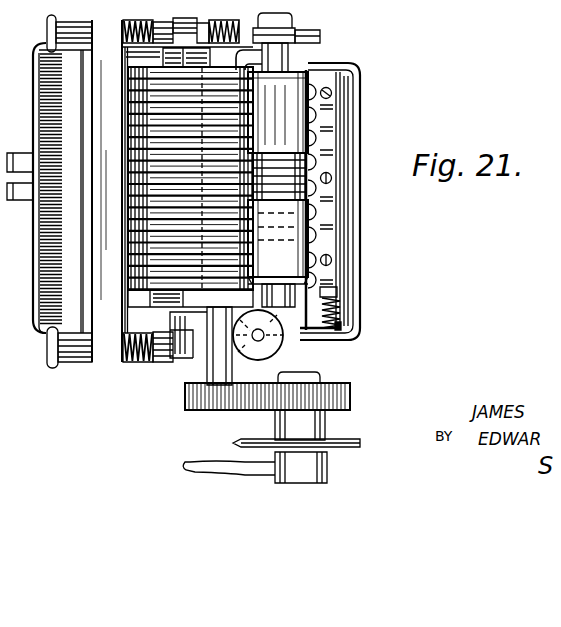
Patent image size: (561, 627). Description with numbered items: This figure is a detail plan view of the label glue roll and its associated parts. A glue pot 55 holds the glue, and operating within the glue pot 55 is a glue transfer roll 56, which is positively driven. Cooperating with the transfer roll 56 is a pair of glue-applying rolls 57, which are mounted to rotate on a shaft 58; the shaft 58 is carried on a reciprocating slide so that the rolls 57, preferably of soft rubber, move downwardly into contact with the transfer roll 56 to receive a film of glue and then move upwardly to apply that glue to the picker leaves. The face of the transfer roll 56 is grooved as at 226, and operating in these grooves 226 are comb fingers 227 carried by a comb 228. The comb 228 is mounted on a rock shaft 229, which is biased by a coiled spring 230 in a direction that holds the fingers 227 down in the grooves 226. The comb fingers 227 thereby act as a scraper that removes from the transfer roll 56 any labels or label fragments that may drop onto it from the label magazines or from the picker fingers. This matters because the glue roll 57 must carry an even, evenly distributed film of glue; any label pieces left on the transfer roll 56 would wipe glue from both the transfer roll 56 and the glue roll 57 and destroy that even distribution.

The glue pot 55 is at (362, 78).
The glue transfer roll 56 is at (160, 70).
The glue-applying rolls 57 is at (290, 90).
The shaft 58 is at (290, 50).
The grooves 226 is at (215, 83).
The comb fingers 227 is at (312, 214).
The comb 228 is at (333, 131).
The rock shaft 229 is at (340, 312).
The coiled spring 230 is at (338, 327).